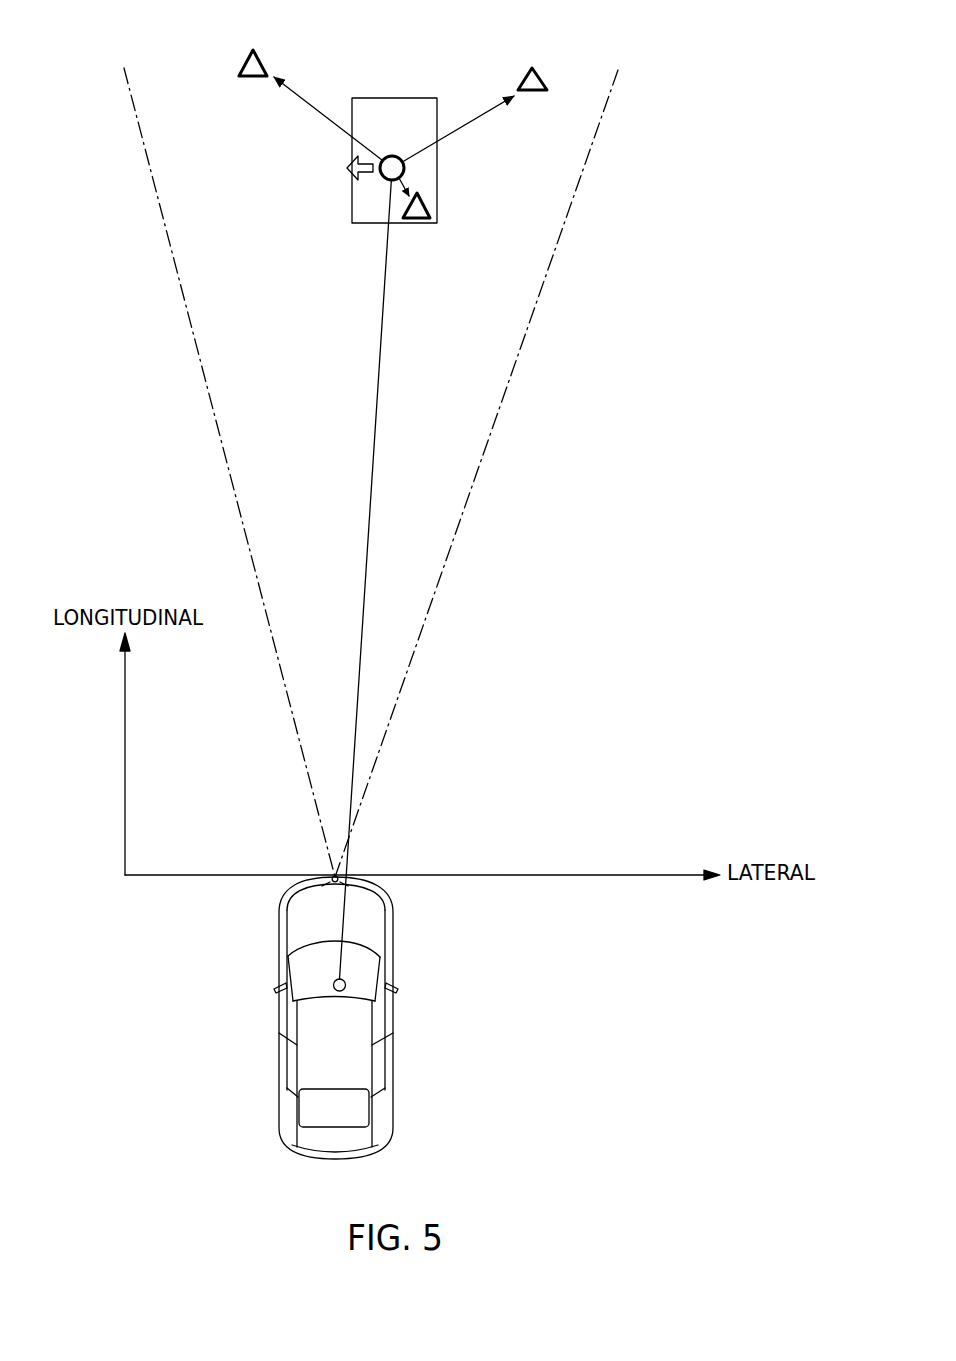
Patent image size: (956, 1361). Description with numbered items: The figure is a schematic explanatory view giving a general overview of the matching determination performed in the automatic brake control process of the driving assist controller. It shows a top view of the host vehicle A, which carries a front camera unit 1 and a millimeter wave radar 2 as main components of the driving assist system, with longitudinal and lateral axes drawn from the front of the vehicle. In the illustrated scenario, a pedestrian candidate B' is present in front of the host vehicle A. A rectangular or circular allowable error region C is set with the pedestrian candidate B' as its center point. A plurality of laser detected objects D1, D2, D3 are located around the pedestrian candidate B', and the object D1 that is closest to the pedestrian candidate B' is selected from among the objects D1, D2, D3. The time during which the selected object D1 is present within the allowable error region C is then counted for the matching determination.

The host vehicle A is at (396, 964).
The front camera unit 1 is at (333, 984).
The millimeter wave radar 2 is at (289, 903).
The pedestrian candidate B' is at (388, 110).
The allowable error region C is at (440, 162).
The object D1 is at (415, 221).
The object D2 is at (530, 66).
The object D3 is at (252, 48).